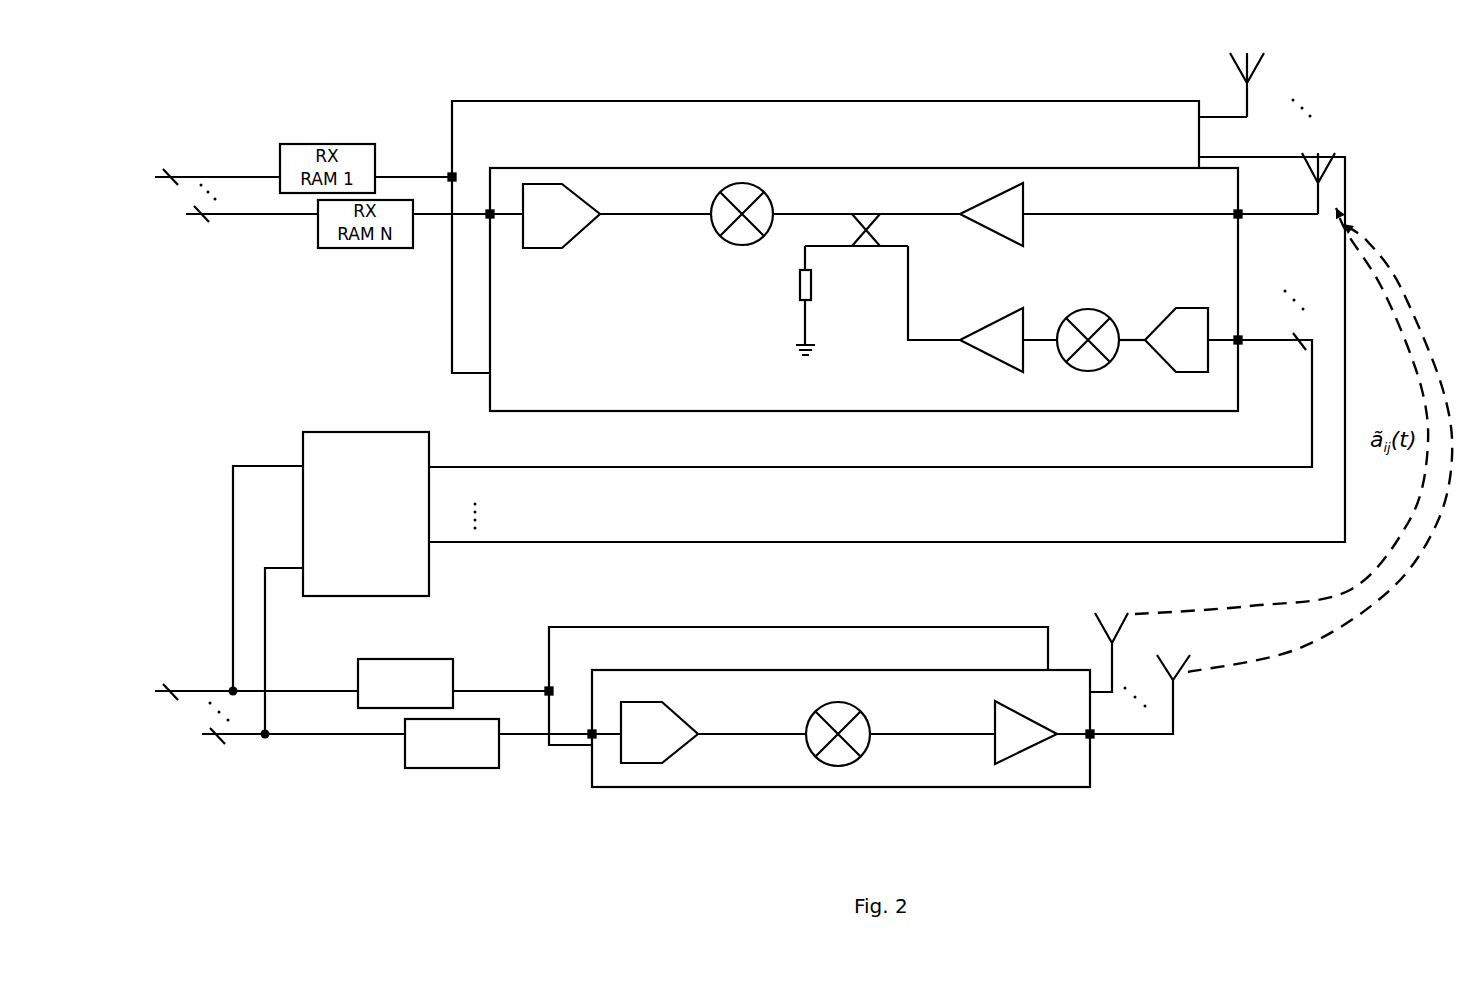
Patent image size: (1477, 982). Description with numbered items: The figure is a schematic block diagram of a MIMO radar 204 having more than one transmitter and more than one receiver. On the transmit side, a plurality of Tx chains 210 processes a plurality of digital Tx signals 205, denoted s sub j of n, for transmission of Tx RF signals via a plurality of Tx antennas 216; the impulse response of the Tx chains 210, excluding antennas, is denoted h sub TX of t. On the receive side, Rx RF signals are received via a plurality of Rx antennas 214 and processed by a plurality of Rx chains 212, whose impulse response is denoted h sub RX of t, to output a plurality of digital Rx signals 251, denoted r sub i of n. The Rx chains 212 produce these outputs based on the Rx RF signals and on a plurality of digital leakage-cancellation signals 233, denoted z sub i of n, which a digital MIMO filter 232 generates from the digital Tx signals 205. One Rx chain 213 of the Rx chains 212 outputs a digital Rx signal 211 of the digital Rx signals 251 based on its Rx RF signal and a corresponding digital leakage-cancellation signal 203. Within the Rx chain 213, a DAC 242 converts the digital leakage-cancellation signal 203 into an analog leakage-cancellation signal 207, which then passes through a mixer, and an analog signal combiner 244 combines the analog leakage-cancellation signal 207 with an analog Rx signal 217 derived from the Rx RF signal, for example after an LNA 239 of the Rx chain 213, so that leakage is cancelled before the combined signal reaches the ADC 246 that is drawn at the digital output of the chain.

The Rx chains 212 is at (418, 90).
The Rx chain 213 is at (895, 167).
The digital Rx signal 211 is at (442, 216).
The digital Rx signals 251 is at (102, 205).
The analog-to-digital converter 246 is at (570, 242).
The analog signal combiner 244 is at (889, 233).
The LNA 239 is at (1027, 232).
The analog Rx signal 217 is at (1087, 213).
The analog leakage-cancellation signal 207 is at (1127, 343).
The DAC 242 is at (1173, 312).
The digital leakage-cancellation signal 203 is at (1307, 367).
The digital leakage-cancellation signals 233 is at (1112, 535).
The Rx antennas 214 is at (1318, 75).
The digital MIMO filter 232 is at (375, 430).
The digital Tx signals 205 is at (118, 725).
The MIMO radar 204 is at (322, 855).
The Tx chains 210 is at (547, 785).
The Tx antennas 216 is at (1187, 755).